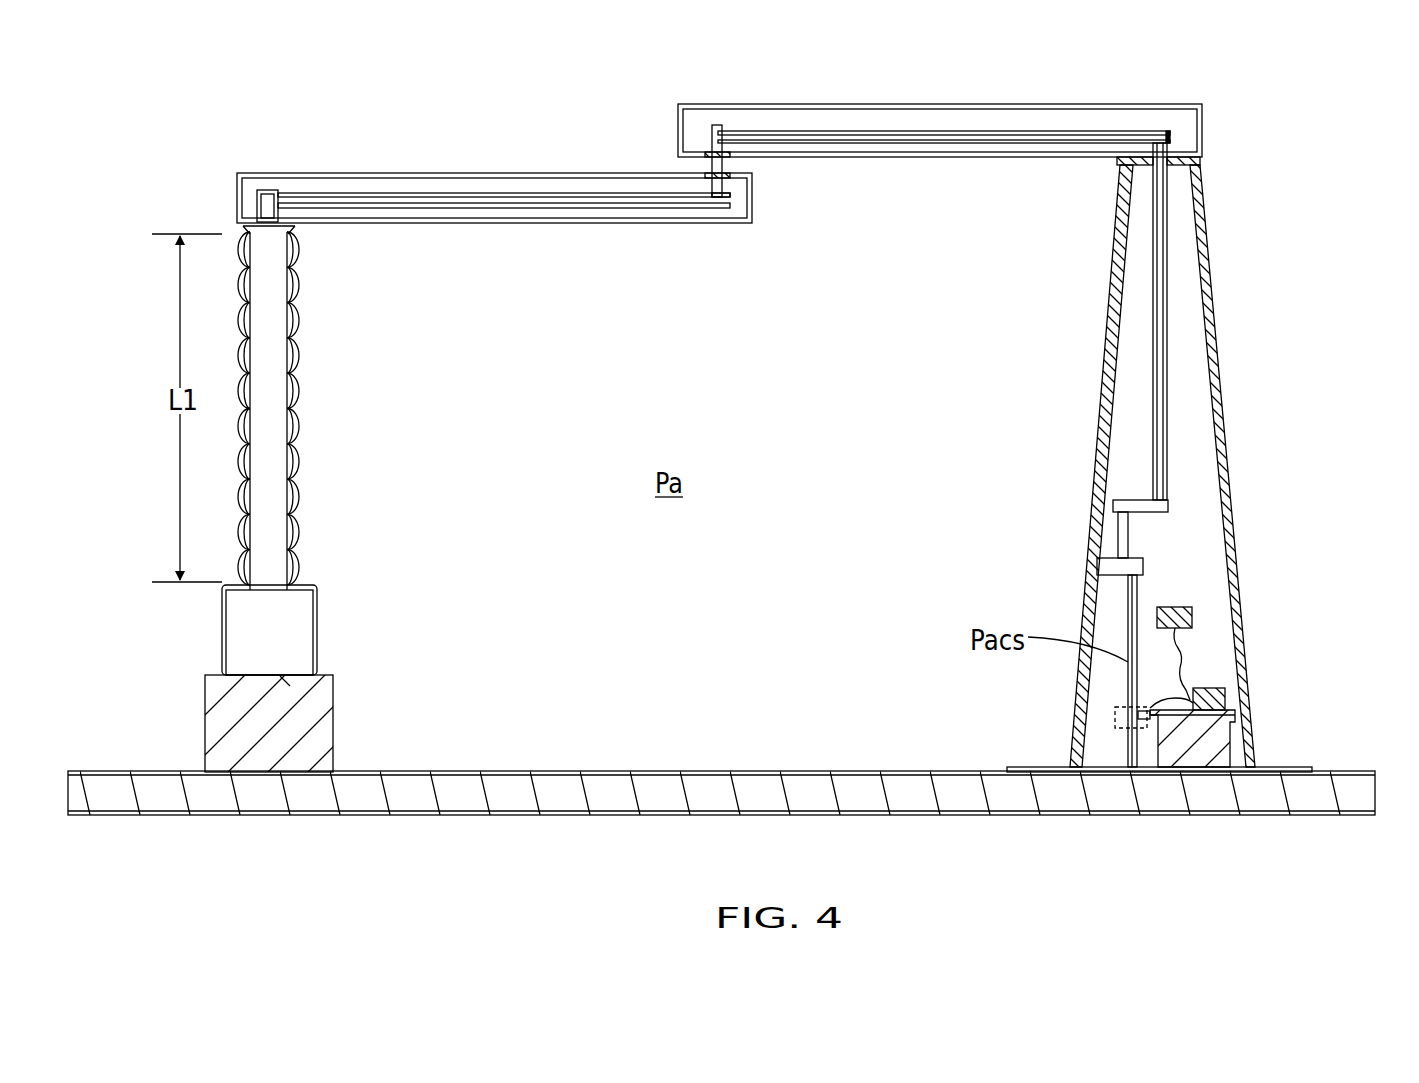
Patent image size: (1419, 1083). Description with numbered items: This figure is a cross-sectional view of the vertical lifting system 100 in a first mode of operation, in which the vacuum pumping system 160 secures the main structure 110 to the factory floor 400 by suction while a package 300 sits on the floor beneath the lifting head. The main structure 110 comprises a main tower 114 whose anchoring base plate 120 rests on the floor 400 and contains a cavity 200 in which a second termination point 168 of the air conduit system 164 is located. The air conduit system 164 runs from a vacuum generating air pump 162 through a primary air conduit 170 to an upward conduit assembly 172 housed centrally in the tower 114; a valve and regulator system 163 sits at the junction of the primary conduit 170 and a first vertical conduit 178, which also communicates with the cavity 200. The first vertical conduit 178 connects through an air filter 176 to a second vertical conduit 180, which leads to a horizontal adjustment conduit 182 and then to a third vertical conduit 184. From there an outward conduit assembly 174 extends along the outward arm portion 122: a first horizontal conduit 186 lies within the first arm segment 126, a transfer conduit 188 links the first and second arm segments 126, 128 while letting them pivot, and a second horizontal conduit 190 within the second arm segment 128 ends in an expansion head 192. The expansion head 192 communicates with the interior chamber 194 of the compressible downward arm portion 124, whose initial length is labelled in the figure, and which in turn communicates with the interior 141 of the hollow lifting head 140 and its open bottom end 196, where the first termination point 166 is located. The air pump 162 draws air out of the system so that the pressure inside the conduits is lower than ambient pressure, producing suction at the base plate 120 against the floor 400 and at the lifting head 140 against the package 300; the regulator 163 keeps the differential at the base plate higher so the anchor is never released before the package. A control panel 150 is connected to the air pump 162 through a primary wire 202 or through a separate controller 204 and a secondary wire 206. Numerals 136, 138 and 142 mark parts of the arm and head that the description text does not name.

The vertical lifting system 100 is at (1286, 108).
The main structure 110 is at (1205, 462).
The main tower 114 is at (1110, 368).
The anchoring base plate 120 is at (1146, 792).
The outward arm portion 122 is at (940, 125).
The downward arm portion 124 is at (302, 412).
The first arm segment 126 is at (850, 118).
The second arm segment 128 is at (505, 172).
The top fitting 136 is at (292, 238).
The arm housing 138 is at (260, 170).
The hollow lifting head 140 is at (224, 608).
The interior of the vertical lifting head 141 is at (252, 646).
The lower end of bellows 142 is at (298, 565).
The control panel 150 is at (1193, 615).
The vacuum pumping system 160 is at (1255, 734).
The vacuum generating air pump 162 is at (1220, 757).
The valve and regulator system 163 is at (1115, 718).
The air conduit system 164 is at (1151, 296).
The first termination point 166 is at (278, 658).
The second termination point 168 is at (1133, 777).
The primary air conduit 170 is at (1150, 710).
The upward conduit assembly 172 is at (1187, 417).
The outward conduit assembly 174 is at (744, 207).
The air filter 176 is at (1105, 565).
The first vertical conduit 178 is at (1140, 595).
The second vertical conduit 180 is at (1118, 520).
The horizontal adjustment conduit 182 is at (1152, 512).
The third vertical conduit 184 is at (1168, 257).
The first horizontal conduit 186 is at (915, 150).
The transfer conduit 188 is at (735, 183).
The second horizontal conduit 190 is at (490, 210).
The expansion head 192 is at (265, 210).
The interior chamber 194 is at (278, 383).
The bottom end 196 is at (285, 680).
The cavity 200 is at (1093, 777).
The primary wire 202 is at (1180, 650).
The controller 204 is at (1218, 707).
The secondary wire 206 is at (1192, 777).
The package 300 is at (215, 735).
The factory floor 400 is at (705, 770).